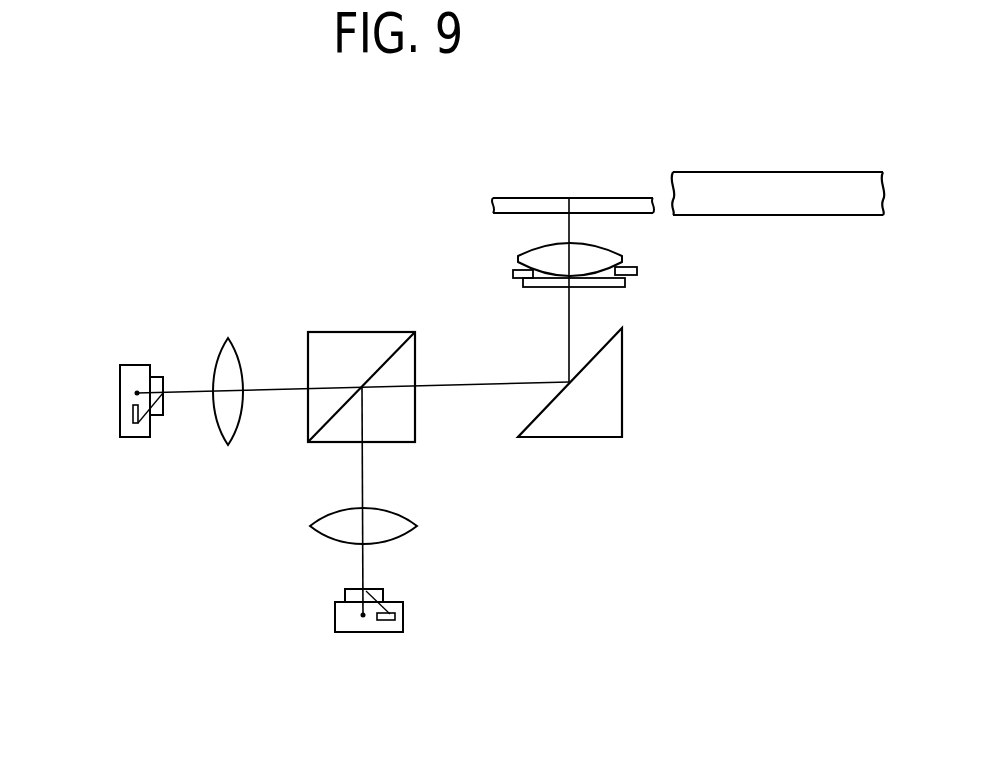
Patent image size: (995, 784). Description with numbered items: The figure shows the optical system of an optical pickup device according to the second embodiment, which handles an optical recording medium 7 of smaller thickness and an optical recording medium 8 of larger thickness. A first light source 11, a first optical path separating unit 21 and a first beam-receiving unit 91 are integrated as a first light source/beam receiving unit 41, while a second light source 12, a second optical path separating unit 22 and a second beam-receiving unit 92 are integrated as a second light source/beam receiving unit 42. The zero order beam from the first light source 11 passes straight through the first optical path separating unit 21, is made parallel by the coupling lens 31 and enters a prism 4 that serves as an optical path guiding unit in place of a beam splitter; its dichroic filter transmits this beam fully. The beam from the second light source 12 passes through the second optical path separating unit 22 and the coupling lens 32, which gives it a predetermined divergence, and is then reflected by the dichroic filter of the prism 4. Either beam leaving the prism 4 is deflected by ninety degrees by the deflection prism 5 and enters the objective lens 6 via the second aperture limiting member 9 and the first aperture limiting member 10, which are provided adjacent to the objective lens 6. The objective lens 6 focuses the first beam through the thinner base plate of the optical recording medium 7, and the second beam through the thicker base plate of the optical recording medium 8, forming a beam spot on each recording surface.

The prism 4 is at (360, 340).
The deflection prism 5 is at (625, 398).
The objective lens 6 is at (525, 258).
The optical recording medium having a smaller thickness 7 is at (612, 198).
The optical recording medium having a larger thickness 8 is at (810, 180).
The second aperture limiting member 9 is at (615, 285).
The first aperture limiting member 10 is at (640, 271).
The first light source 11 is at (137, 393).
The second light source 12 is at (363, 615).
The first optical path separating unit 21 is at (158, 378).
The second optical path separating unit 22 is at (385, 595).
The coupling lens 31 is at (228, 345).
The coupling lens 32 is at (410, 520).
The first light source/beam receiving unit 41 is at (141, 325).
The second light source/beam receiving unit 42 is at (290, 619).
The first beam-receiving unit 91 is at (125, 420).
The second beam-receiving unit 92 is at (393, 620).